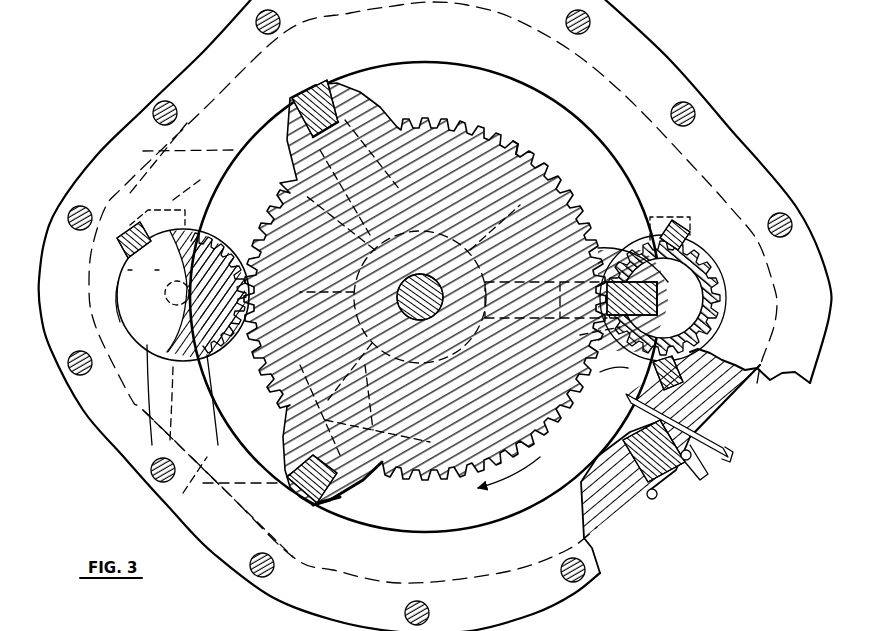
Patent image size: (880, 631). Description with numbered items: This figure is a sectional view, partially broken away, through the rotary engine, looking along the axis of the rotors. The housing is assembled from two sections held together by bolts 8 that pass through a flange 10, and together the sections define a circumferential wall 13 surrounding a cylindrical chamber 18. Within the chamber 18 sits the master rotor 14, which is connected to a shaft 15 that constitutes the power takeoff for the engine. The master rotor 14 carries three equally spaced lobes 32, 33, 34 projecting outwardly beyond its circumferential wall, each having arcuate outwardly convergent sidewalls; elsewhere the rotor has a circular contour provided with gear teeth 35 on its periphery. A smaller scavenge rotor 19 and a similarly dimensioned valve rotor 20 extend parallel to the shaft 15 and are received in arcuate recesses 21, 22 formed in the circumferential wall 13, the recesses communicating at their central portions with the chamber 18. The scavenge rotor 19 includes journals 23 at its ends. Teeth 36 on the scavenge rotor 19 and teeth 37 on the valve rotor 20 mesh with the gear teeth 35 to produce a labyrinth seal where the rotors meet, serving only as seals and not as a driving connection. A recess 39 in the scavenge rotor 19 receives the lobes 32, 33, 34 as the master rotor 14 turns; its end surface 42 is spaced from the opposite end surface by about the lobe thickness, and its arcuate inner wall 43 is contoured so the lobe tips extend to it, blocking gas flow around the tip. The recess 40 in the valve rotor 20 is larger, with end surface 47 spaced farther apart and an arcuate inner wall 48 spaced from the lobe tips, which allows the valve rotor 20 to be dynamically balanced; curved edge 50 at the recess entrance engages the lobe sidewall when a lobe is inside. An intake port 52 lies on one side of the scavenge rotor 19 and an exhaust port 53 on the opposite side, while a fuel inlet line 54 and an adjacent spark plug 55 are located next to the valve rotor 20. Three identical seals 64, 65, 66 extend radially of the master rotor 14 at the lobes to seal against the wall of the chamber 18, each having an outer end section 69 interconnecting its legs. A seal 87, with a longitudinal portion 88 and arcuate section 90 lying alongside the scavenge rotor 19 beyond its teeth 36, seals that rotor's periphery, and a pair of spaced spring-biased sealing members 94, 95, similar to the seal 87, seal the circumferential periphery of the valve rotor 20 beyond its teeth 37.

The bolts 8 is at (157, 106).
The flange 10 is at (645, 72).
The circumferential wall 13 is at (422, 62).
The master rotor 14 is at (554, 166).
The shaft 15 is at (440, 292).
The cylindrical chamber 18 is at (500, 97).
The scavenge rotor 19 is at (231, 212).
The valve rotor 20 is at (705, 297).
The arcuate recess 21 is at (152, 372).
The arcuate recess 22 is at (705, 270).
The journals 23 is at (170, 300).
The lobe 32 is at (659, 277).
The lobe 33 is at (340, 497).
The lobe 34 is at (368, 112).
The gear teeth 35 is at (515, 140).
The teeth 36 is at (216, 360).
The teeth 37 is at (640, 382).
The recess 39 is at (120, 308).
The recess 40 is at (690, 308).
The end surface 42 is at (145, 270).
The arcuate inner wall 43 is at (178, 322).
The end surface 47 is at (605, 369).
The arcuate inner wall 48 is at (703, 328).
The edge 50 is at (585, 337).
The intake port 52 is at (150, 152).
The exhaust port 53 is at (218, 483).
The fuel inlet line 54 is at (782, 468).
The spark plug 55 is at (690, 478).
The seal 64 is at (661, 300).
The seal 65 is at (290, 477).
The seal 66 is at (305, 88).
The outer end section 69 is at (668, 312).
The seal 87 is at (130, 216).
The longitudinal portion 88 is at (120, 244).
The arcuate section 90 is at (186, 188).
The sealing member 94 is at (669, 210).
The sealing member 95 is at (693, 396).